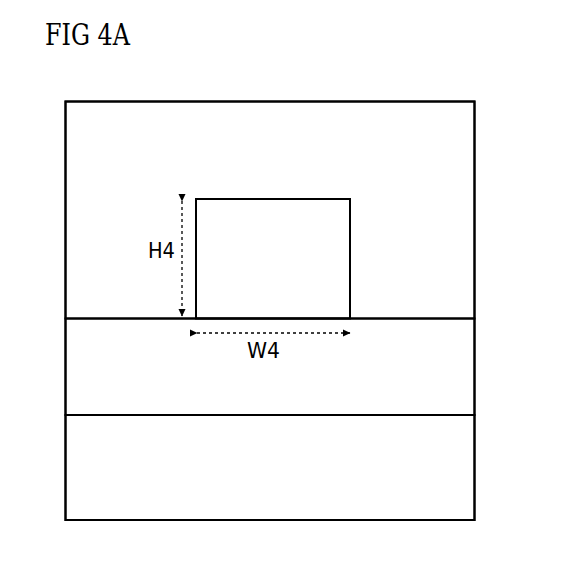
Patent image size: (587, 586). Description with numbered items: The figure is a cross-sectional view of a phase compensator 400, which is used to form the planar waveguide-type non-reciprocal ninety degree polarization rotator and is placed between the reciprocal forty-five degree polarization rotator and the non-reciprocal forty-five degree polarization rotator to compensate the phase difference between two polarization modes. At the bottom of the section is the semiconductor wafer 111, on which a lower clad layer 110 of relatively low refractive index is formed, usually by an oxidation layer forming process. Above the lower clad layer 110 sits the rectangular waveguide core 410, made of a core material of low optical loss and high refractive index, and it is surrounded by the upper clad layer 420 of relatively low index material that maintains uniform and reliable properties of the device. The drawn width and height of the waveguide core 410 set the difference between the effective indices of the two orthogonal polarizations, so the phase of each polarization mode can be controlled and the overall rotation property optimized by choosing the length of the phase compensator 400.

The phase compensator 400 is at (270, 296).
The dielectric layer 420 is at (270, 210).
The fin / feature 410 is at (273, 243).
The lower clad layer 110 is at (270, 367).
The semiconductor wafer 111 is at (270, 467).